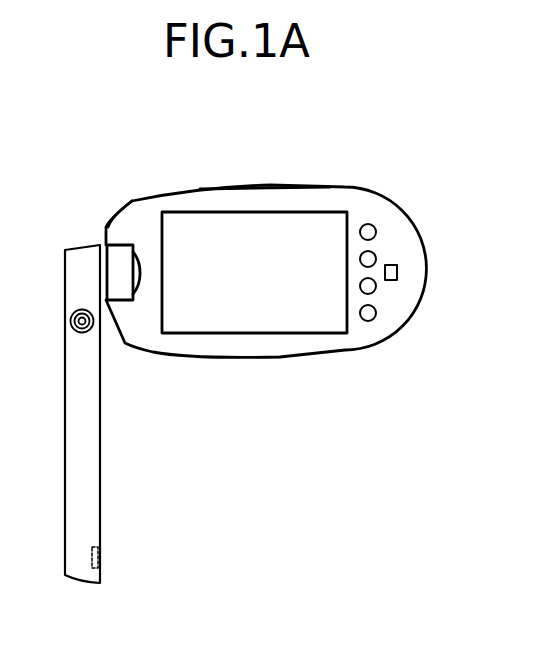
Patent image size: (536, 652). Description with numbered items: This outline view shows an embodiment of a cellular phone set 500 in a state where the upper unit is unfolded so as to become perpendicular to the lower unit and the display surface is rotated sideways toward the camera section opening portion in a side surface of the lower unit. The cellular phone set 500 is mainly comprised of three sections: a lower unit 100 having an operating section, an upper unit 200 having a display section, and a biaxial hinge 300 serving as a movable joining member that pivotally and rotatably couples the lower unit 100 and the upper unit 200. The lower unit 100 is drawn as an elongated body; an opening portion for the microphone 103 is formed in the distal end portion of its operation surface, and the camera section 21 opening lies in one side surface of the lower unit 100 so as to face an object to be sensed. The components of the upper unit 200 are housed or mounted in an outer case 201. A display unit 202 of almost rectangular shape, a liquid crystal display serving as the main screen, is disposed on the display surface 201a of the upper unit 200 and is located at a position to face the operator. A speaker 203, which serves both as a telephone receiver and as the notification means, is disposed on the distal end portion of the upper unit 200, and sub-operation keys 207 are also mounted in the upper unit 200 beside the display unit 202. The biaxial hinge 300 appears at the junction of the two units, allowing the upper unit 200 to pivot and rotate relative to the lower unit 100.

The cellular phone set 500 is at (236, 459).
The lower unit 100 is at (101, 459).
The microphone 103 is at (100, 562).
The camera section 21 is at (70, 323).
The upper unit 200 is at (376, 347).
The outer case 201 is at (256, 187).
The display surface 201a is at (147, 226).
The display unit 202 is at (262, 322).
The speaker 203 is at (398, 272).
The sub-operation keys 207 is at (368, 223).
The biaxial hinge 300 is at (137, 302).